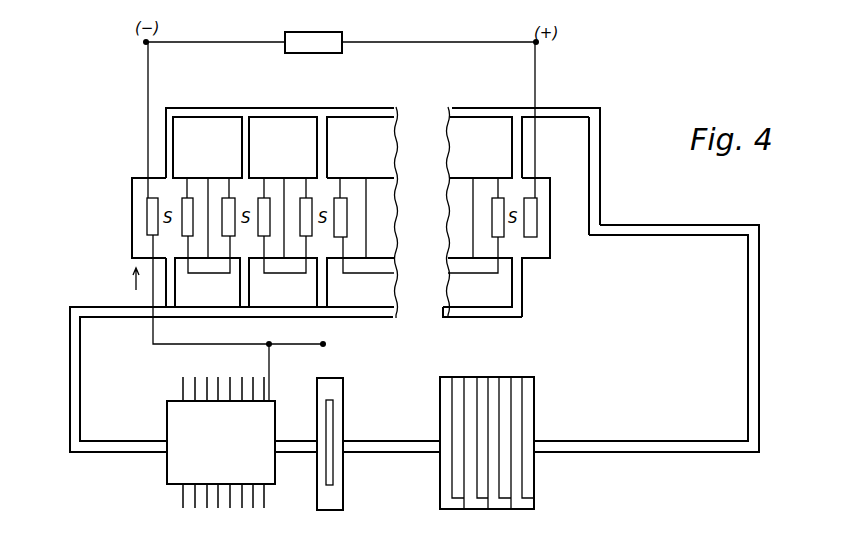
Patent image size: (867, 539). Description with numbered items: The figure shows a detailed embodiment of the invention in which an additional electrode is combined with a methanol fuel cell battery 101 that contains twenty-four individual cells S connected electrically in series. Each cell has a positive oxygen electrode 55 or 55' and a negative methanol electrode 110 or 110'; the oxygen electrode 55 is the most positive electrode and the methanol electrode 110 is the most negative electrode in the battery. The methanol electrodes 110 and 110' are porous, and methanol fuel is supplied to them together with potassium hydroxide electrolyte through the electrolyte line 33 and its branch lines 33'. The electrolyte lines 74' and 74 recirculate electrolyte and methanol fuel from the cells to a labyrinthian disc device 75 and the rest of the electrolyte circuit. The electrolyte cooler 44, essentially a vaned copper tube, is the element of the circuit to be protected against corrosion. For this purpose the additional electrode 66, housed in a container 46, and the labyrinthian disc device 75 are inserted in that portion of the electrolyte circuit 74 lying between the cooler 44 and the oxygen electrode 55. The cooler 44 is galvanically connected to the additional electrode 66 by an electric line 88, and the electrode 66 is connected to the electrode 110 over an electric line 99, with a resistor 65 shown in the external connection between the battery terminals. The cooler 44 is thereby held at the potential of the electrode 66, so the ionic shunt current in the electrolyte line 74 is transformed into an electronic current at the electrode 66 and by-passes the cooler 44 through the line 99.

The resistor 65 is at (310, 32).
The electric line 99 is at (153, 329).
The negative methanol electrode 110 is at (124, 216).
The fuel cell battery 101 is at (131, 242).
The electrolyte line 74' is at (383, 212).
The positive oxygen electrode 55' is at (278, 193).
The negative methanol electrode 110' is at (357, 198).
The positive oxygen electrode 55 is at (544, 162).
The branch line 33' is at (367, 282).
The electrolyte line 33 is at (272, 379).
The electrolyte circuit 74 is at (646, 338).
The electric line 88 is at (269, 360).
The electrolyte cooler 44 is at (183, 492).
The container 46 is at (335, 510).
The additional electrode 66 is at (327, 490).
The labyrinthian disc device 75 is at (480, 512).